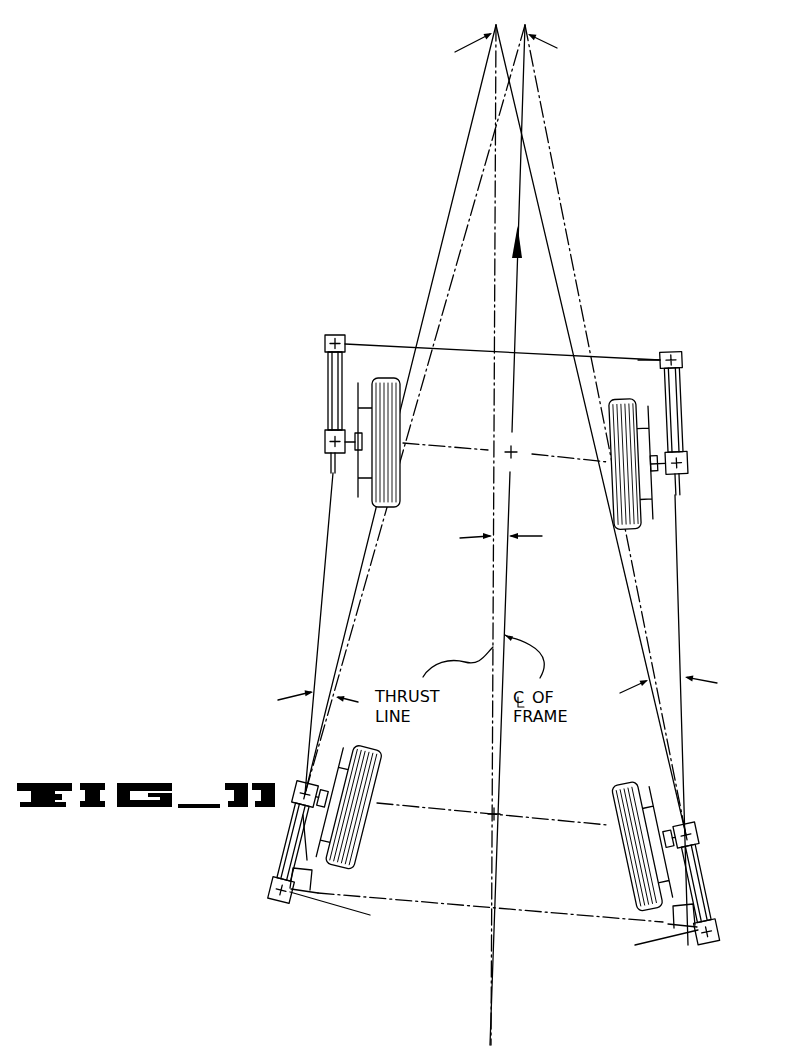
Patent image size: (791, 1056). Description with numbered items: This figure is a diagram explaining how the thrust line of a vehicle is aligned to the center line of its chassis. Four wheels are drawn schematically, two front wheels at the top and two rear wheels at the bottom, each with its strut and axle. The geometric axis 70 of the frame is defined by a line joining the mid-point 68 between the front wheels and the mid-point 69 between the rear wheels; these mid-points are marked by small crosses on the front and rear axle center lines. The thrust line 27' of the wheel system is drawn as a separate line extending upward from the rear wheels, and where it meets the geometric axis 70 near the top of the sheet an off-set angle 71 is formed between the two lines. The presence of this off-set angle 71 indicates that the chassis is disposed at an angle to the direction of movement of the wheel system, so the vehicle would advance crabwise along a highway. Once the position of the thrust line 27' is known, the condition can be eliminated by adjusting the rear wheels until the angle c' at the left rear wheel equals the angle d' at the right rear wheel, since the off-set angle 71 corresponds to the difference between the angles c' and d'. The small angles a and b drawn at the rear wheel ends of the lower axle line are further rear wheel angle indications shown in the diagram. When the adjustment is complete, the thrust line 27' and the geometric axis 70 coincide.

The thrust line 27' is at (458, 535).
The mid-point between the front wheels 68 is at (513, 450).
The mid-point between the rear wheels 69 is at (497, 810).
The geometric axis of the frame 70 is at (514, 425).
The off-set angle 71 is at (514, 28).
The left rear wheel toe angle a is at (348, 901).
The right rear wheel toe angle b is at (655, 928).
The angle c' is at (318, 677).
The angle d' is at (668, 680).